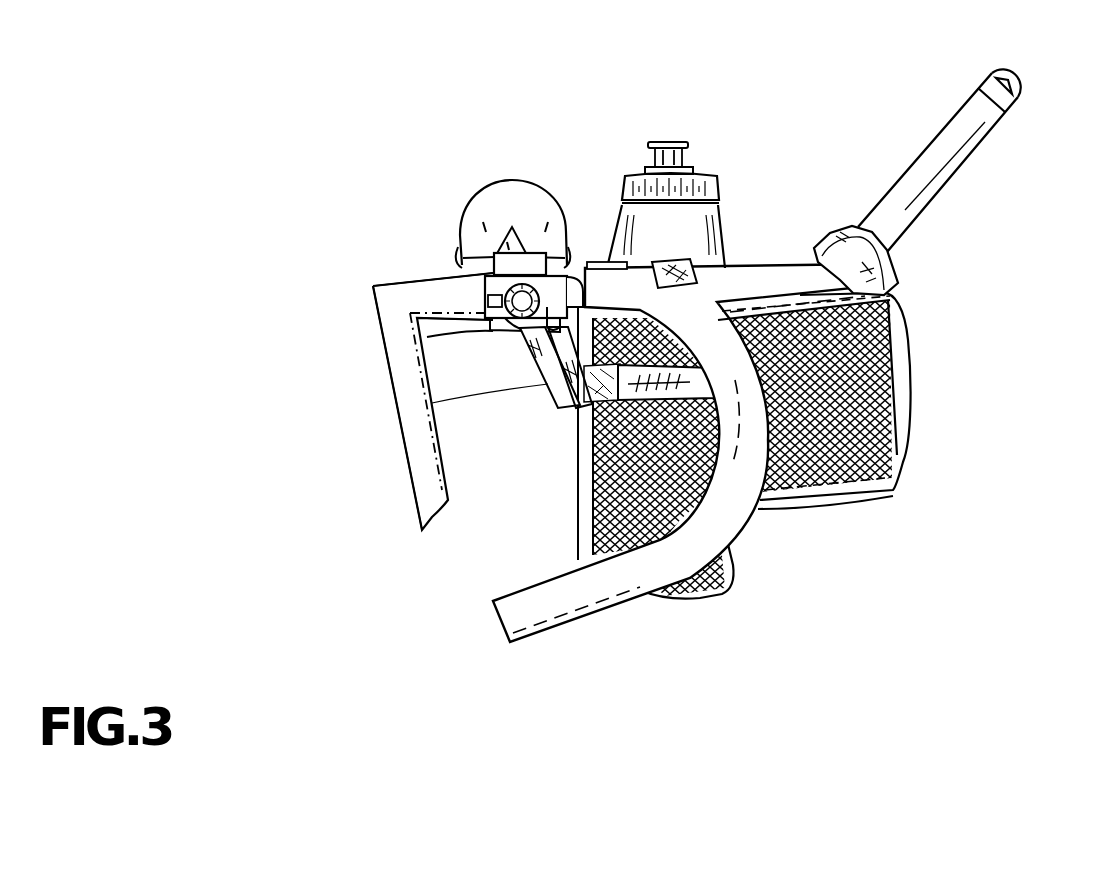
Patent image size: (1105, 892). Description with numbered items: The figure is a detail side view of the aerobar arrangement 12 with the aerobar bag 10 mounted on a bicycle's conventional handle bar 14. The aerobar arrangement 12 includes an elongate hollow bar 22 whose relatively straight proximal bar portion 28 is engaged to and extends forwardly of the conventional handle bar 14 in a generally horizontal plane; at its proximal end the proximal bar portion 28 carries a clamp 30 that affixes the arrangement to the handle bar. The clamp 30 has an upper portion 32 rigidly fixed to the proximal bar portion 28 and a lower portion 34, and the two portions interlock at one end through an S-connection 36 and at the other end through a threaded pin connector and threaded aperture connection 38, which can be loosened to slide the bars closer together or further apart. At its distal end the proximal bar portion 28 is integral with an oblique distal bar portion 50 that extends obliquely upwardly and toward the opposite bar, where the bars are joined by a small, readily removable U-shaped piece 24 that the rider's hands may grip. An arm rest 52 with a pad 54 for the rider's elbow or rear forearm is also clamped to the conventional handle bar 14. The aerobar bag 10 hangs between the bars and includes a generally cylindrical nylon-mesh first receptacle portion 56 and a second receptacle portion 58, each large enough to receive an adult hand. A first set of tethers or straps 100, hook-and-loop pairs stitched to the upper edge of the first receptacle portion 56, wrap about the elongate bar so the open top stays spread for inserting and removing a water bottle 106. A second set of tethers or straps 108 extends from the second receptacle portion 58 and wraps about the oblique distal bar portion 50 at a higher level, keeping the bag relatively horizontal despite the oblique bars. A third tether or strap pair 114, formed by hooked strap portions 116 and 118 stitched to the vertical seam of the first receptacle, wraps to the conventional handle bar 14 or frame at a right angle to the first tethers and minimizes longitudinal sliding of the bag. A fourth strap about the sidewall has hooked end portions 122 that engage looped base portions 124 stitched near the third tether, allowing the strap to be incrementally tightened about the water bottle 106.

The aerobar bag 10 is at (812, 528).
The aerobar arrangement 12 is at (312, 188).
The conventional handle bar 14 is at (420, 467).
The elongate hollow bar 22 is at (783, 284).
The U-shaped piece 24 is at (1022, 93).
The proximal bar portion 28 is at (746, 286).
The clamp 30 is at (448, 272).
The upper portion 32 is at (556, 284).
The lower portion 34 is at (422, 336).
The S-connection 36 is at (536, 368).
The threaded pin connector and threaded aperture connection 38 is at (468, 296).
The oblique distal bar portion 50 is at (962, 120).
The arm rest 52 is at (494, 205).
The pad 54 is at (521, 193).
The first receptacle portion 56 is at (590, 487).
The second receptacle portion 58 is at (905, 428).
The first set of tethers or straps 100 is at (607, 268).
The water bottle 106 is at (720, 207).
The second set of tethers or straps 108 is at (872, 265).
The third tether or strap pair 114 is at (376, 422).
The hooked Velcro strap portion 116 is at (430, 405).
The hooked Velcro strap portion 118 is at (548, 383).
The hooked Velcro end portion 122 is at (690, 383).
The looped Velcro base portion 124 is at (592, 402).